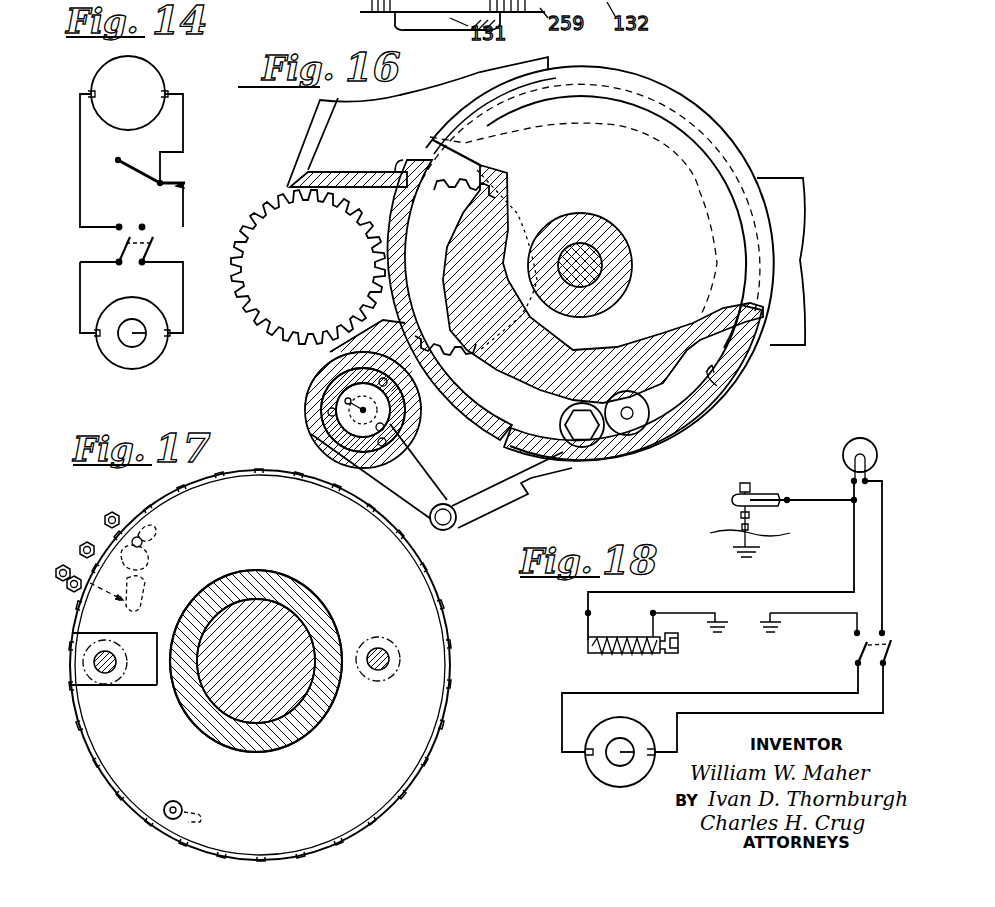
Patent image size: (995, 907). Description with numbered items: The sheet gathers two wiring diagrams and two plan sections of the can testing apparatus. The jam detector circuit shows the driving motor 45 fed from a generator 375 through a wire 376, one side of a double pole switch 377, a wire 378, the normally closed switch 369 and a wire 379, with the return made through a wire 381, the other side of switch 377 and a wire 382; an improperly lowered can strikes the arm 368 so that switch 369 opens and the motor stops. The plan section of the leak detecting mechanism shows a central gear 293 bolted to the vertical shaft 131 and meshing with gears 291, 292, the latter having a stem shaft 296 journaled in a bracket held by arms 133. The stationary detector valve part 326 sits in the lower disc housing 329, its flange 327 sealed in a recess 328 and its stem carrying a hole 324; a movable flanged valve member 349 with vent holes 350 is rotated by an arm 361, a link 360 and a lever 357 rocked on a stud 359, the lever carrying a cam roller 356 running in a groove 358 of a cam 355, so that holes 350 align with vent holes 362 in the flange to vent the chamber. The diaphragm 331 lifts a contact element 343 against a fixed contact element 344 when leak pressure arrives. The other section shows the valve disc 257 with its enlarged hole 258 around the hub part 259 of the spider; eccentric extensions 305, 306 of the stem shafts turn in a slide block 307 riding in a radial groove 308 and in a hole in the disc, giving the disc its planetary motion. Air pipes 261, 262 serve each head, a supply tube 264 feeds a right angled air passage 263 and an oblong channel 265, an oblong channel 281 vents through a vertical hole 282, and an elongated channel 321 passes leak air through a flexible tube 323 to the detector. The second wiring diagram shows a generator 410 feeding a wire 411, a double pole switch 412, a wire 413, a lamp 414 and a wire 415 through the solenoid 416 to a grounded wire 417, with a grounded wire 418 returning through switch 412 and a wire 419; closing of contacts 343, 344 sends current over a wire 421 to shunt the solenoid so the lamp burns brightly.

In FIG. 14, the driving motor 45 is at (165, 72).
In FIG. 14, the wire 379 is at (184, 119).
In FIG. 14, the wire 381 is at (80, 152).
In FIG. 14, the switch arm 368 is at (136, 158).
In FIG. 14, the switch 369 is at (186, 178).
In FIG. 14, the wire 378 is at (184, 208).
In FIG. 14, the double pole switch 377 is at (158, 243).
In FIG. 14, the wire 382 is at (80, 298).
In FIG. 14, the wire 376 is at (183, 300).
In FIG. 14, the generator 375 is at (158, 358).
In FIG. 16, the gear 291 is at (308, 267).
In FIG. 16, the central gear 293 is at (423, 218).
In FIG. 16, the gear 292 is at (618, 238).
In FIG. 16, the stem shaft 296 is at (596, 265).
In FIG. 16, the arms 133 is at (789, 190).
In FIG. 16, the stationary detector valve part 326 is at (350, 340).
In FIG. 16, the flange 327 is at (333, 352).
In FIG. 16, the recess 328 is at (322, 375).
In FIG. 16, the lower disc housing 329 is at (316, 393).
In FIG. 16, the hole 324 is at (360, 410).
In FIG. 16, the arm 361 is at (336, 423).
In FIG. 16, the movable flanged valve member 349 is at (386, 385).
In FIG. 16, the vent holes 350 is at (384, 429).
In FIG. 16, the vent holes 362 is at (386, 445).
In FIG. 16, the link 360 is at (379, 471).
In FIG. 16, the lever 357 is at (501, 491).
In FIG. 16, the stud 359 is at (580, 432).
In FIG. 16, the cam roller 356 is at (636, 421).
In FIG. 16, the groove 358 is at (716, 390).
In FIG. 16, the cam 355 is at (756, 348).
In FIG. 17, the valve disc 257 is at (380, 803).
In FIG. 17, the enlarged hole 258 is at (264, 566).
In FIG. 17, the hub part 259 is at (293, 594).
In FIG. 17, the vertical shaft 131 is at (288, 622).
In FIG. 17, the eccentric extension 306 is at (376, 672).
In FIG. 17, the eccentric extension 305 is at (104, 675).
In FIG. 17, the slide block 307 is at (145, 641).
In FIG. 17, the groove 308 is at (152, 688).
In FIG. 17, the air pipe 262 is at (110, 511).
In FIG. 17, the air pipe 261 is at (85, 542).
In FIG. 17, the supply tube 264 is at (62, 565).
In FIG. 17, the right angled air passage 263 is at (103, 606).
In FIG. 17, the oblong channel 281 is at (160, 519).
In FIG. 17, the vertical hole 282 is at (143, 542).
In FIG. 17, the oblong channel 265 is at (152, 570).
In FIG. 17, the flexible tube 323 is at (183, 803).
In FIG. 17, the elongated channel 321 is at (206, 811).
In FIG. 18, the lamp 414 is at (866, 447).
In FIG. 18, the wire 413 is at (882, 556).
In FIG. 18, the wire 421 is at (826, 500).
In FIG. 18, the wire 415 is at (854, 560).
In FIG. 18, the wire 417 is at (660, 616).
In FIG. 18, the wire 418 is at (792, 616).
In FIG. 18, the solenoid 416 is at (588, 648).
In FIG. 18, the double pole switch 412 is at (857, 650).
In FIG. 18, the wire 419 is at (762, 693).
In FIG. 18, the wire 411 is at (722, 713).
In FIG. 18, the generator 410 is at (586, 769).
In FIG. 18, the fixed contact element 344 is at (742, 508).
In FIG. 18, the contact element 343 is at (752, 522).
In FIG. 18, the diaphragm 331 is at (714, 535).